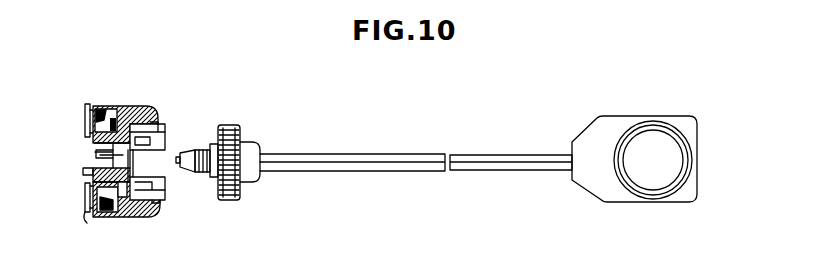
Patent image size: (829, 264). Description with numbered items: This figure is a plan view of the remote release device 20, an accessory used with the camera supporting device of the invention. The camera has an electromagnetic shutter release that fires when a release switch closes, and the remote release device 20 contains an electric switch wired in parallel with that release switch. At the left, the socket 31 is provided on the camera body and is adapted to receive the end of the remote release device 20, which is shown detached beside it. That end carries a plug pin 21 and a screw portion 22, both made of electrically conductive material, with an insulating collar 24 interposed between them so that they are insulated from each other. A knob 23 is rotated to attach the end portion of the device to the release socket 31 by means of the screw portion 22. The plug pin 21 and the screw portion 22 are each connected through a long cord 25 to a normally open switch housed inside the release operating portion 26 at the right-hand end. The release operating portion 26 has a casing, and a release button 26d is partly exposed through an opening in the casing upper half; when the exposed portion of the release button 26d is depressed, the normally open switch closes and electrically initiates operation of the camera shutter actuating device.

The remote release device 20 is at (443, 163).
The plug pin 21 is at (176, 157).
The screw portion 22 is at (202, 173).
The knob 23 is at (237, 125).
The insulating collar 24 is at (191, 151).
The cord 25 is at (333, 168).
The release operating portion 26 is at (653, 142).
The release button 26d is at (670, 160).
The socket 31 is at (165, 185).